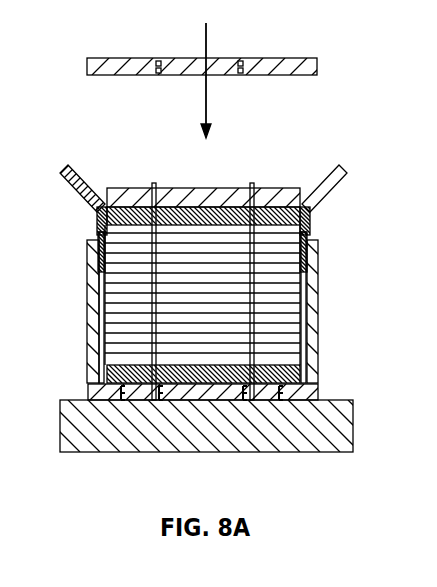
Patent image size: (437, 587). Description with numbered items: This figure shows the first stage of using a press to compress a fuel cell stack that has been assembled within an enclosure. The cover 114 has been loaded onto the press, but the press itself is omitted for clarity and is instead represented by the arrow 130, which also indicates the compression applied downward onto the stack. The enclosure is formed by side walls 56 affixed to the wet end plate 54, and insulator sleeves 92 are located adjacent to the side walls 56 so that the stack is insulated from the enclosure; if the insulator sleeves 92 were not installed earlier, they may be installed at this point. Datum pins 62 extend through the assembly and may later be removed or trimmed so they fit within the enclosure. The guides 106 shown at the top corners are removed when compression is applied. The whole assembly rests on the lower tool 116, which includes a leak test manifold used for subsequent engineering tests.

The cover 114 is at (318, 63).
The arrow 130 is at (208, 96).
The datum pin 62 is at (153, 183).
The guide 106 is at (80, 190).
The side wall 56 is at (88, 350).
The insulator sleeve 92 is at (100, 290).
The wet end plate 54 is at (302, 373).
The lower tool 116 is at (330, 453).